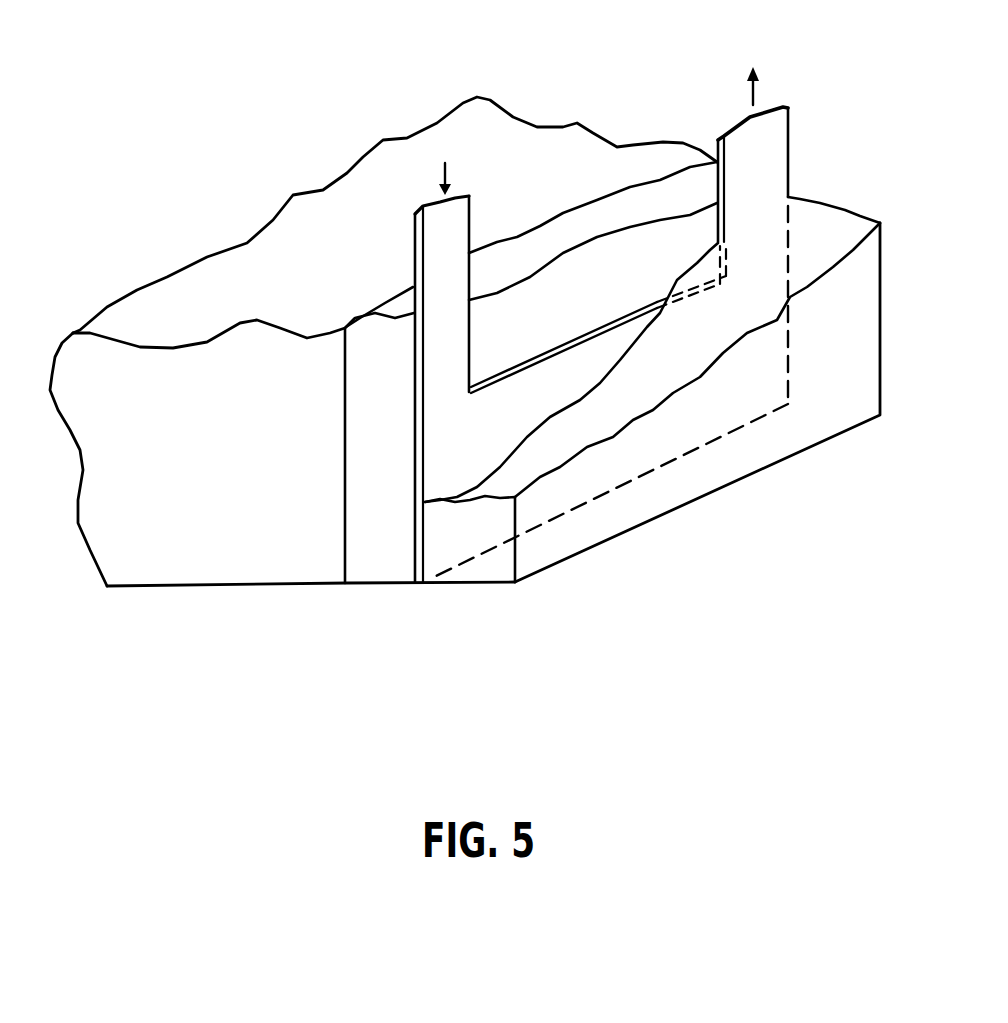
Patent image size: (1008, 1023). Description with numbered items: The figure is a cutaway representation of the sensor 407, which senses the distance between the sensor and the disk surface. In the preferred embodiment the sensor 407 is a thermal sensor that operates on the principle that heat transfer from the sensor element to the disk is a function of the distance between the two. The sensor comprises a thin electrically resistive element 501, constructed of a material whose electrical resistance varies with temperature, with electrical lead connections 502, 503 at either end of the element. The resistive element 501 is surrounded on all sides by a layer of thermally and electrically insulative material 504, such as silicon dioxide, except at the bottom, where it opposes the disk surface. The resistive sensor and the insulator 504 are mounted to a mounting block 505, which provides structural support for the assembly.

The sensor 407 is at (364, 54).
The thin electrically resistive element 501 is at (424, 584).
The electrical lead connection 502 is at (472, 223).
The electrical lead connection 503 is at (789, 136).
The layer of thermally and electrically insulative material 504 is at (373, 584).
The mounting block 505 is at (178, 297).